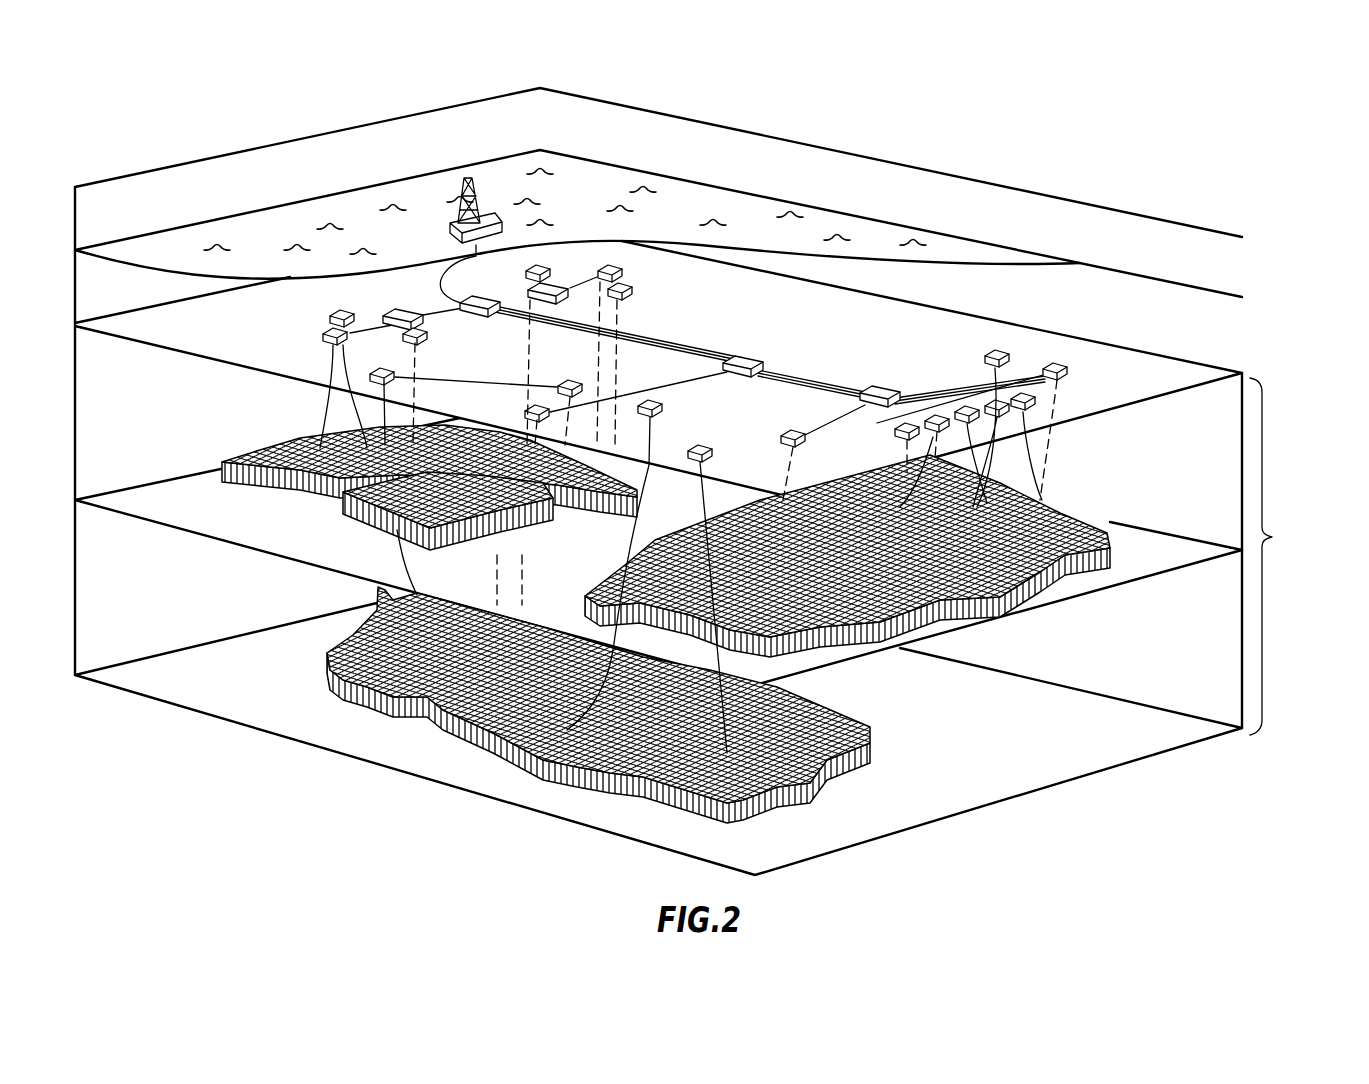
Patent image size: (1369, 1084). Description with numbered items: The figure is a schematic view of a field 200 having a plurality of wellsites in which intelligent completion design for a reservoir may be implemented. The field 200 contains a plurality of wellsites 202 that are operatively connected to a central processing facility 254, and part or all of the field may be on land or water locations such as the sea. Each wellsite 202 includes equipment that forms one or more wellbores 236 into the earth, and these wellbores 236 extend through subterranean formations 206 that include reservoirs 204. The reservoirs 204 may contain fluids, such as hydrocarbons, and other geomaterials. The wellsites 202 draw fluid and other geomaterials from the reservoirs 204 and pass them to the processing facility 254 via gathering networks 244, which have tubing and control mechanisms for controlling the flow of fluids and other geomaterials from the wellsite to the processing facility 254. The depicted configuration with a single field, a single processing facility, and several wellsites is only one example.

The field 200 is at (128, 108).
The wellsites 202 is at (808, 417).
The reservoirs 204 is at (852, 783).
The subterranean formations 206 is at (1304, 554).
The wellbores 236 is at (1040, 497).
The gathering networks 244 is at (368, 335).
The central processing facility 254 is at (446, 193).